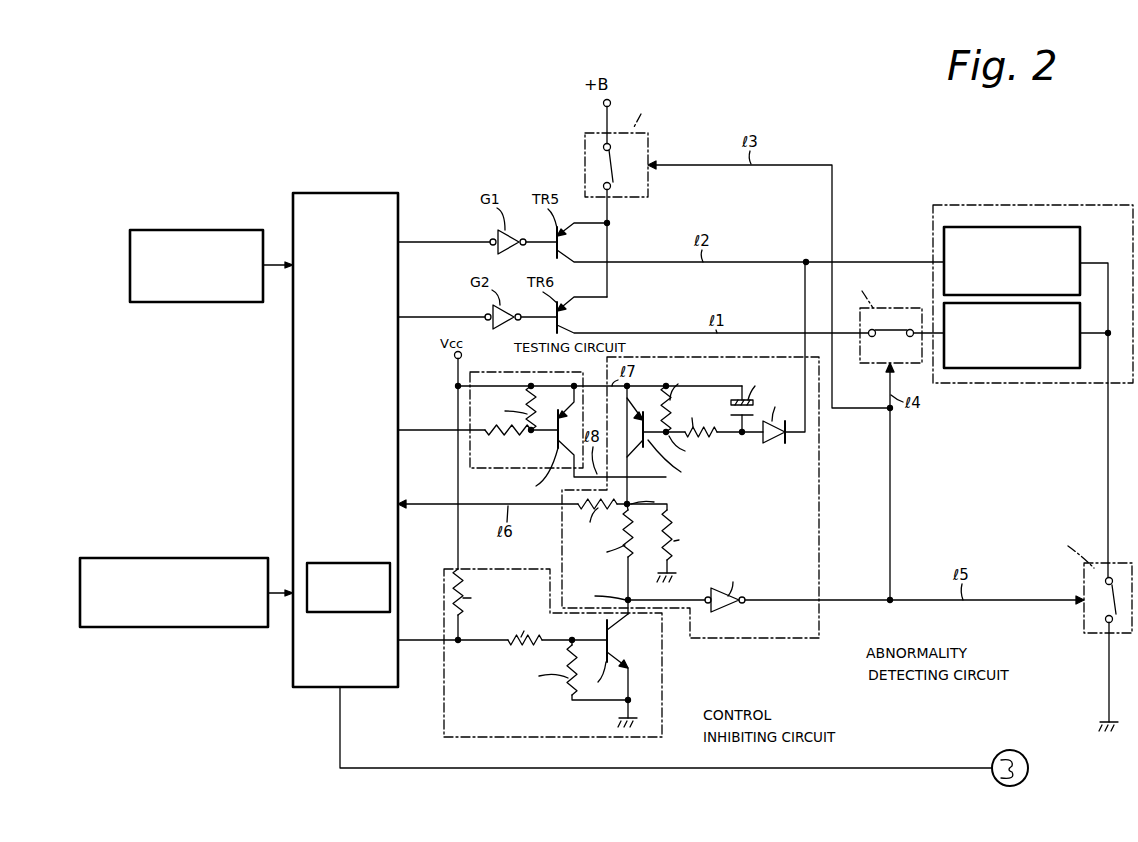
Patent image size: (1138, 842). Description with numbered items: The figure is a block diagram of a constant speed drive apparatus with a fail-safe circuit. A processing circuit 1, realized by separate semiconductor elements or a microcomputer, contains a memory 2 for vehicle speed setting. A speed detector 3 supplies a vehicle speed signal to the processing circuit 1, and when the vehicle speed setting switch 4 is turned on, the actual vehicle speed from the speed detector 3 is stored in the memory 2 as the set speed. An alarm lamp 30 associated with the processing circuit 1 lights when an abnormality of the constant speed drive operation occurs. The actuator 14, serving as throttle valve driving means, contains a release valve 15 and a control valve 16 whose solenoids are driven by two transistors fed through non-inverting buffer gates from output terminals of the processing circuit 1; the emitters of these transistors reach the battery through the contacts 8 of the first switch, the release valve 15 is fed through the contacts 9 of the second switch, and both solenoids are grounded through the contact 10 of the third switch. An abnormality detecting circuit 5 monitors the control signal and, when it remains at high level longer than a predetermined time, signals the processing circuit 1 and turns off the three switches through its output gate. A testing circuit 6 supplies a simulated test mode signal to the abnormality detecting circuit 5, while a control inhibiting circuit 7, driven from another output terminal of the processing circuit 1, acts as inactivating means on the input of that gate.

The processing circuit 1 is at (343, 202).
The memory 2 is at (360, 568).
The speed detector 3 is at (216, 236).
The vehicle speed setting switch 4 is at (211, 562).
The abnormality detecting circuit 5 is at (819, 638).
The testing circuit 6 is at (492, 372).
The control inhibiting circuit 7 is at (663, 692).
The contacts of switch SW1 8 is at (614, 159).
The contacts of switch SW2 9 is at (897, 326).
The contact of switch SW3 10 is at (1126, 634).
The actuator 14 is at (1001, 207).
The release valve 15 is at (1009, 370).
The control valve 16 is at (1076, 246).
The alarm lamp 30 is at (1028, 768).